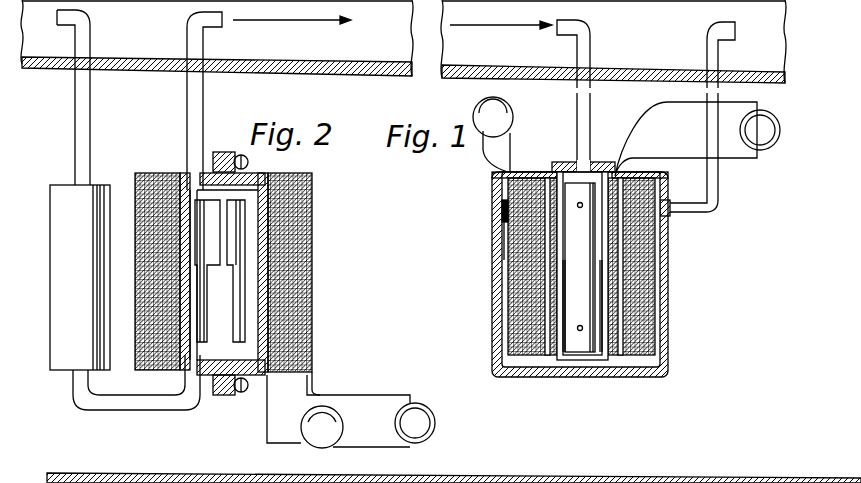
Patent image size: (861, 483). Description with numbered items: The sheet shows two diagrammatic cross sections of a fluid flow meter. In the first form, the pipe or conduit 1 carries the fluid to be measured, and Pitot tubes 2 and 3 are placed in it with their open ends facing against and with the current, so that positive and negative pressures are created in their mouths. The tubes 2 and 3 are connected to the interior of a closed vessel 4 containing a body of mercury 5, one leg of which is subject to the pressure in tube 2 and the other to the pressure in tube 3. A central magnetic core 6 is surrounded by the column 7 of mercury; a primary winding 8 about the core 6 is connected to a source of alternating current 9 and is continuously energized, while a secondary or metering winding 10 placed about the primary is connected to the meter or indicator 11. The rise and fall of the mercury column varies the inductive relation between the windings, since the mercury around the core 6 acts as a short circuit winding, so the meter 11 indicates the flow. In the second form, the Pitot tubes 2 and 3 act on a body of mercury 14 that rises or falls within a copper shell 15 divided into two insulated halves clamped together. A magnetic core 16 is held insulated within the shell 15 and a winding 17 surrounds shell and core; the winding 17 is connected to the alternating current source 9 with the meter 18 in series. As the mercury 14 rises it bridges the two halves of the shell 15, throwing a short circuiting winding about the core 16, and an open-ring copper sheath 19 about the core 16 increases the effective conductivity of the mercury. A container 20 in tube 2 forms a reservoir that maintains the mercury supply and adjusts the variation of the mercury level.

In FIG. 2, the pipe or conduit 1 is at (160, 40).
In FIG. 1, the pipe or conduit 1 is at (527, 48).
In FIG. 2, the Pitot tube 2 is at (83, 30).
In FIG. 1, the Pitot tube 2 is at (590, 42).
In FIG. 2, the Pitot tube 3 is at (204, 28).
In FIG. 1, the Pitot tube 3 is at (707, 42).
In FIG. 1, the closed vessel 4 is at (500, 210).
In FIG. 1, the body of mercury 5 is at (503, 260).
In FIG. 1, the central magnetic core 6 is at (578, 337).
In FIG. 1, the column 7 is at (600, 303).
In FIG. 1, the primary winding 8 is at (610, 342).
In FIG. 2, the source of alternating current 9 is at (424, 436).
In FIG. 1, the source of alternating current 9 is at (771, 148).
In FIG. 1, the secondary or metering winding 10 is at (520, 310).
In FIG. 1, the meter or indicator 11 is at (492, 120).
In FIG. 2, the body of mercury 14 is at (310, 283).
In FIG. 2, the copper shell 15 is at (312, 240).
In FIG. 2, the magnetic core 16 is at (222, 303).
In FIG. 2, the winding 17 is at (288, 348).
In FIG. 2, the meter 18 is at (313, 432).
In FIG. 2, the copper sheath 19 is at (235, 222).
In FIG. 2, the container 20 is at (70, 228).